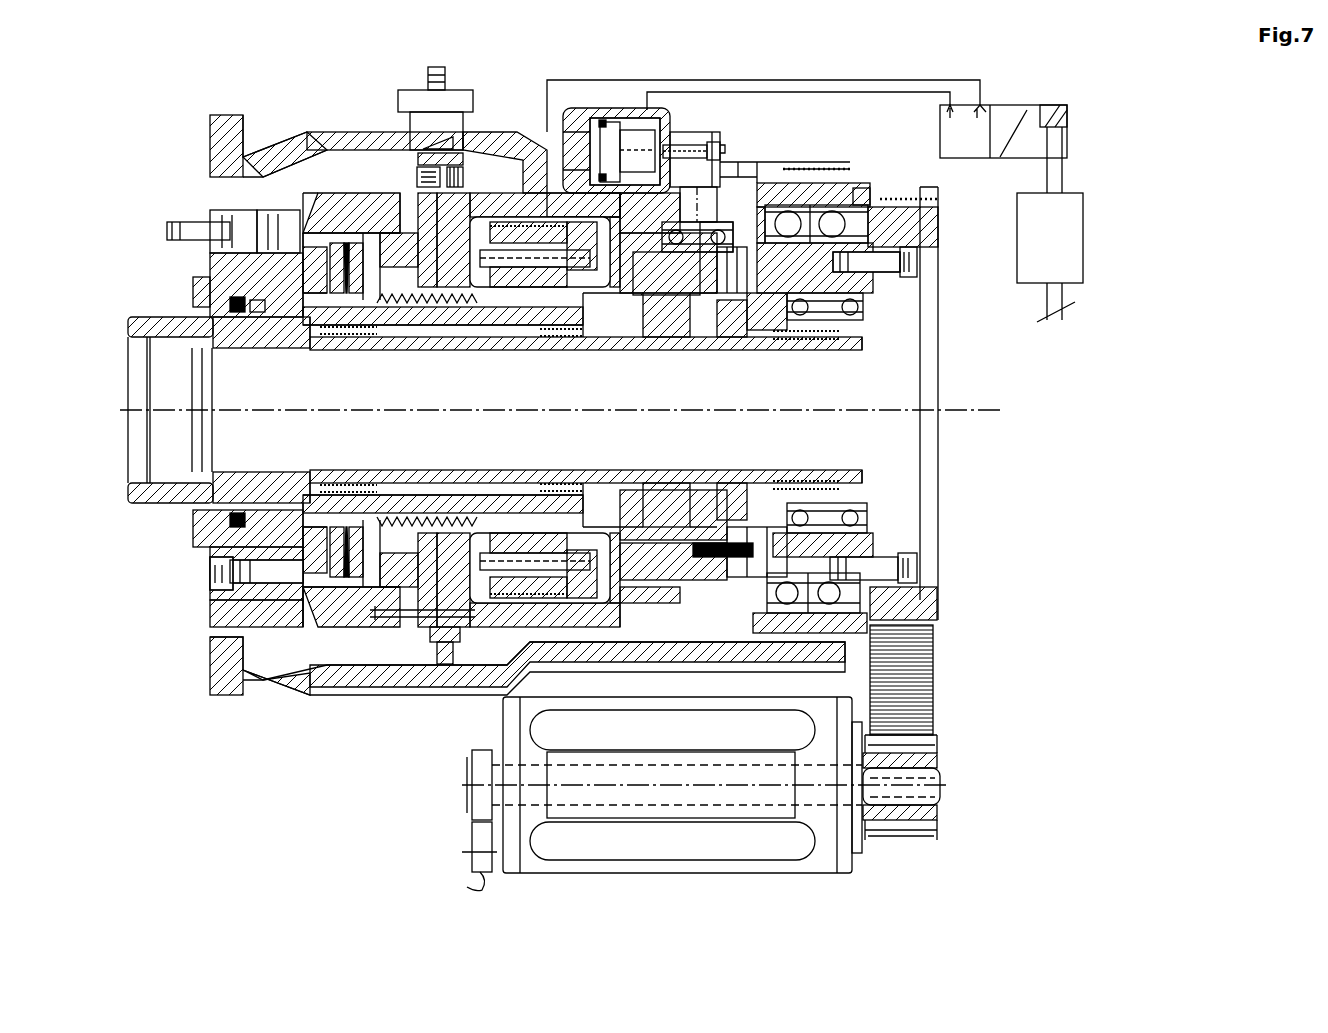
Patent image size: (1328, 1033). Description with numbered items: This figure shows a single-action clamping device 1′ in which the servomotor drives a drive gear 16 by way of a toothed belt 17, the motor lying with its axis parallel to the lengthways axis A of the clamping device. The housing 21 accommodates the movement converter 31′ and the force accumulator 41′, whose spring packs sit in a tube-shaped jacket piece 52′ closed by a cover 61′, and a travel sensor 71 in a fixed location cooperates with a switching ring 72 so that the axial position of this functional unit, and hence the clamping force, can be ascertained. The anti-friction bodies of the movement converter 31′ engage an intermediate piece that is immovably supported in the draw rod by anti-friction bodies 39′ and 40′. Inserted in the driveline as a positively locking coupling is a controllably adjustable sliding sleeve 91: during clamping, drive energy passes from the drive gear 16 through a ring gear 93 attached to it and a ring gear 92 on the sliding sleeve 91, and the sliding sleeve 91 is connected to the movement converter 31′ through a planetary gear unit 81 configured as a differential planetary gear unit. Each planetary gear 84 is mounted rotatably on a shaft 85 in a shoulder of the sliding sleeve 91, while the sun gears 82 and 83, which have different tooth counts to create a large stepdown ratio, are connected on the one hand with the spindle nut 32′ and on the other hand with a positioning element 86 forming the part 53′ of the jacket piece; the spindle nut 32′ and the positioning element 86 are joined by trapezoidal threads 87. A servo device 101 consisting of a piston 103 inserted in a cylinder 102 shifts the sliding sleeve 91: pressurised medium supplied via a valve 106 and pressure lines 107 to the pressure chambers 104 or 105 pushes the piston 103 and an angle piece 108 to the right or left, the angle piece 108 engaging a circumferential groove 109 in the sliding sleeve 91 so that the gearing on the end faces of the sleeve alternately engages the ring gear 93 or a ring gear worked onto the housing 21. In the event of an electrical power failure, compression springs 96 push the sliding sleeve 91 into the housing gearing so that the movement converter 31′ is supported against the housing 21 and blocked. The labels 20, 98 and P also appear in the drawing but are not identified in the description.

The clamping device 1′ is at (186, 683).
The drive gear 16 is at (920, 220).
The toothed belt 17 is at (935, 680).
The motor 20 is at (466, 835).
The housing 21 is at (507, 180).
The movement converter 31′ is at (340, 357).
The spindle nut 32′ is at (457, 337).
The anti-friction bodies 39′ is at (313, 343).
The anti-friction bodies 40′ is at (690, 290).
The force accumulator 41′ is at (290, 263).
The jacket piece 52′ is at (340, 183).
The part of the jacket piece 53′ is at (363, 213).
The cover 61′ is at (243, 545).
The travel sensor 71 is at (405, 128).
The switching ring 72 is at (470, 640).
The planetary gear unit 81 is at (487, 648).
The sun gear 82 is at (541, 282).
The sun gear 83 is at (503, 293).
The planetary gears 84 is at (570, 262).
The shaft 85 is at (630, 267).
The positioning element 86 is at (453, 260).
The trapezoidal thread 87 is at (367, 277).
The sliding sleeve 91 is at (750, 250).
The ring gear 92 is at (767, 233).
The ring gear 93 is at (795, 200).
The compression springs 96 is at (745, 535).
The bearing 98 is at (873, 540).
The servo device 101 is at (1084, 130).
The cylinder 102 is at (590, 102).
The piston 103 is at (585, 147).
The pressure chamber 104 is at (567, 132).
The pressure chamber 105 is at (627, 173).
The valve 106 is at (1013, 104).
The pressure lines 107 is at (908, 80).
The angle piece 108 is at (715, 150).
The circumferential groove 109 is at (830, 265).
The lengthways axis A is at (840, 408).
The pressure port P is at (961, 145).